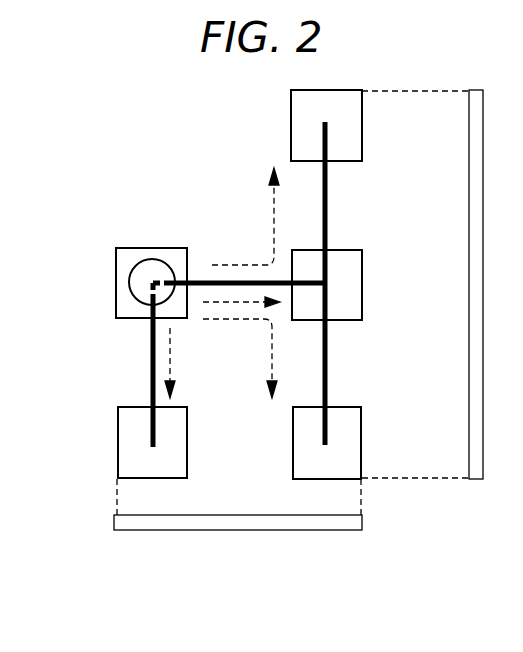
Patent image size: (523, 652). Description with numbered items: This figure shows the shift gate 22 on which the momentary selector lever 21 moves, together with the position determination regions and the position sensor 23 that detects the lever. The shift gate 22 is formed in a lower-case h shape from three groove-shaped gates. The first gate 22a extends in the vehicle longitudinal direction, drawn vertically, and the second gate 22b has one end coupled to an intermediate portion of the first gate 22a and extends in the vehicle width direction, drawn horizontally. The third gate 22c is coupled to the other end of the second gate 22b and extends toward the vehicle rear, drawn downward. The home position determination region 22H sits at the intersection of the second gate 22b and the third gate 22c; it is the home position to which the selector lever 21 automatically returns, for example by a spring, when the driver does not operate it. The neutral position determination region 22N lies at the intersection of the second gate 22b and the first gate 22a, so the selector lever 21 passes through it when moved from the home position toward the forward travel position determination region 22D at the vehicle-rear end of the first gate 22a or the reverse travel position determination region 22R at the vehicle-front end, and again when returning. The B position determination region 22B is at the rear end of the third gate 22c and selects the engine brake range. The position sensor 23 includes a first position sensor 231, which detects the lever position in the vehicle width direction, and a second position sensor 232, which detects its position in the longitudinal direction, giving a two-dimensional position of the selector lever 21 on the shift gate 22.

The selector lever 21 is at (152, 258).
The shift gate 22 is at (236, 190).
The home position determination region 22H is at (116, 282).
The reverse travel position determination region 22R is at (362, 128).
The neutral position determination region 22N is at (362, 283).
The B position determination region 22B is at (118, 445).
The forward travel position determination region 22D is at (362, 441).
The first gate 22a is at (328, 196).
The second gate 22b is at (230, 278).
The third gate 22c is at (150, 365).
The position sensor 23 is at (302, 360).
The first position sensor 231 is at (245, 530).
The second position sensor 232 is at (479, 480).